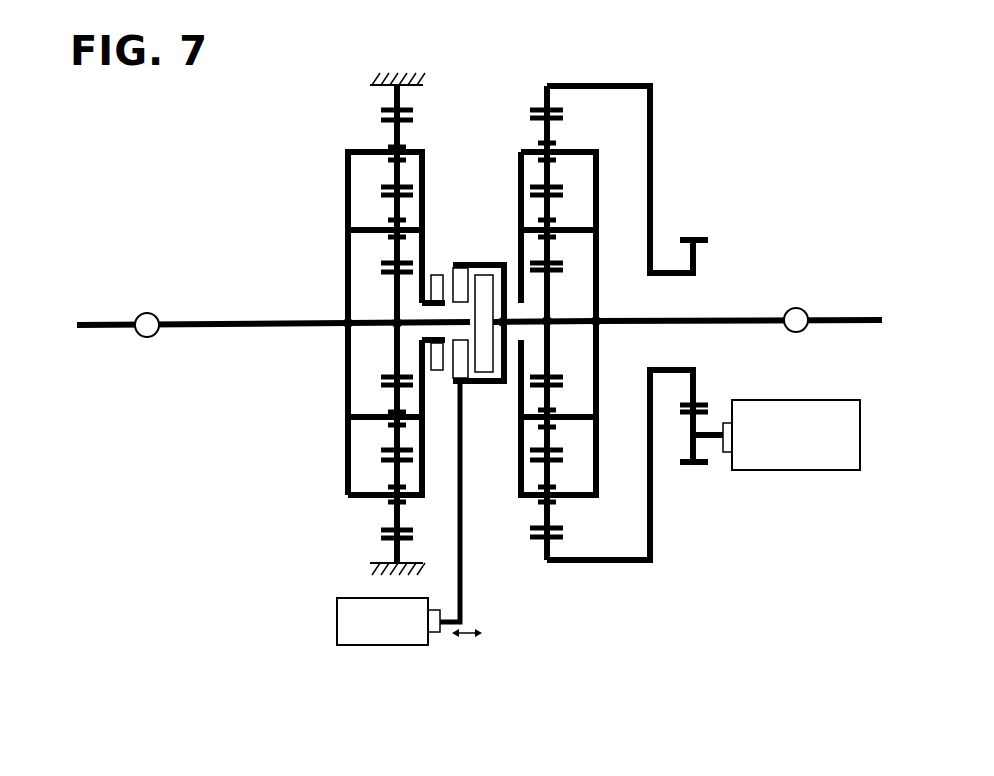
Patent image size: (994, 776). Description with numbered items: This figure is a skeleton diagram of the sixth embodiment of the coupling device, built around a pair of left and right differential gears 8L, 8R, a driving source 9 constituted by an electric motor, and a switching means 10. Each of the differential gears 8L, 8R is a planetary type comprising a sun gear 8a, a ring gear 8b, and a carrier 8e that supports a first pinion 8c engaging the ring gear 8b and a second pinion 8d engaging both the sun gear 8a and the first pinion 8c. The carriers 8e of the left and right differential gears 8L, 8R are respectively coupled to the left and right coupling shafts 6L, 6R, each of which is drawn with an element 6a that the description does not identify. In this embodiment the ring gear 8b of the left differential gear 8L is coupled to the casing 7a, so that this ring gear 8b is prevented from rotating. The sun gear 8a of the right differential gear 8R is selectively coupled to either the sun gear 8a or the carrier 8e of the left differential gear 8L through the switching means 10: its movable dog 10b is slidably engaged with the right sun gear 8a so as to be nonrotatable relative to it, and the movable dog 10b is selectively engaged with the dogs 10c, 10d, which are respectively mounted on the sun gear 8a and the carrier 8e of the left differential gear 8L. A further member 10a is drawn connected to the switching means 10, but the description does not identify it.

The left coupling shaft 6L is at (112, 320).
The right coupling shaft 6R is at (845, 318).
The bearing 6a is at (148, 338).
The casing 7a is at (370, 566).
The left differential gear 8L is at (334, 119).
The right differential gear 8R is at (660, 115).
The sun gear 8a is at (395, 305).
The ring gear 8b is at (414, 110).
The first pinion 8c is at (382, 118).
The second pinion 8d is at (393, 249).
The carrier 8e is at (347, 213).
The driving source 9 is at (787, 472).
The switching means 10 is at (443, 437).
The actuator 10a is at (375, 636).
The movable dog 10b is at (467, 265).
The dog 10c is at (482, 367).
The dog 10d is at (440, 276).